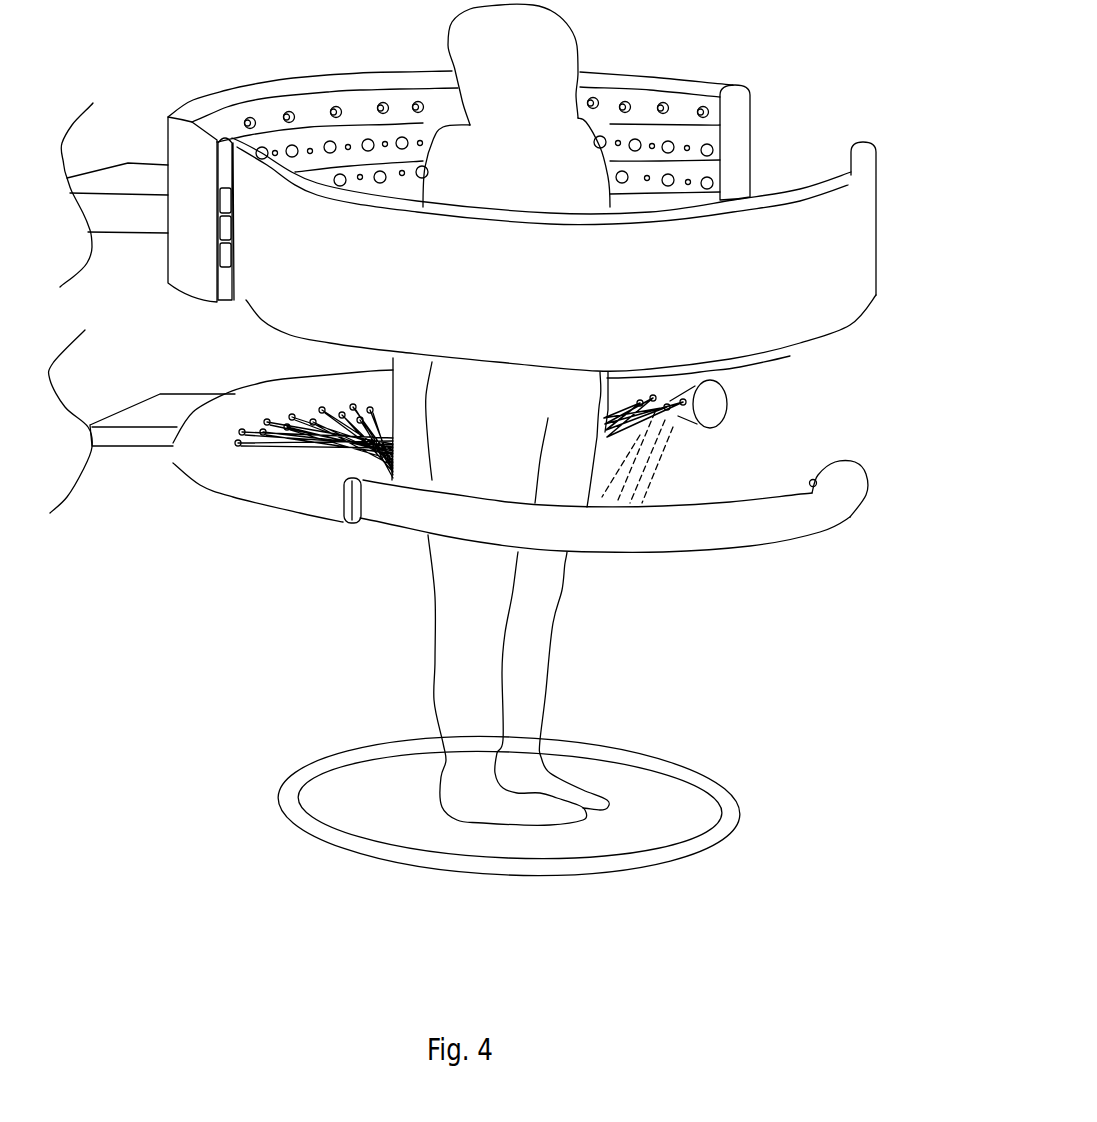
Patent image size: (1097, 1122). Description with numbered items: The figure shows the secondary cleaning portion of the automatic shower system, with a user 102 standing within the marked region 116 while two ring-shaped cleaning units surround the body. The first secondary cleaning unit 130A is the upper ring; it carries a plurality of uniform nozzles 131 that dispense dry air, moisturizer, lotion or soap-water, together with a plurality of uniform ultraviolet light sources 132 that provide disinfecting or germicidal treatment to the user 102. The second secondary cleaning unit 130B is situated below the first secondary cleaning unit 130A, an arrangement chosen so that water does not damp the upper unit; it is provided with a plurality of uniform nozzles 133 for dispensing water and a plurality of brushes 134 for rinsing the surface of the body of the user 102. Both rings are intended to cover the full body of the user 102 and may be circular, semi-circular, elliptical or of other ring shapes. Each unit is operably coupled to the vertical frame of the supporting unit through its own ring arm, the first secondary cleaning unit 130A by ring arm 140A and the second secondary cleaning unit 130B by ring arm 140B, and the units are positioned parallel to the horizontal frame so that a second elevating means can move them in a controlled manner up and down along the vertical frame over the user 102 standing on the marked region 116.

The user 102 is at (527, 623).
The marked region 116 is at (683, 847).
The first secondary cleaning unit 130A is at (800, 282).
The second secondary cleaning unit 130B is at (748, 530).
The uniform nozzles 131 is at (722, 133).
The uniform ultraviolet light sources 132 is at (713, 182).
The uniform nozzles 133 is at (693, 402).
The brushes 134 is at (670, 412).
The ring arm 140A is at (122, 208).
The ring arm 140B is at (122, 437).